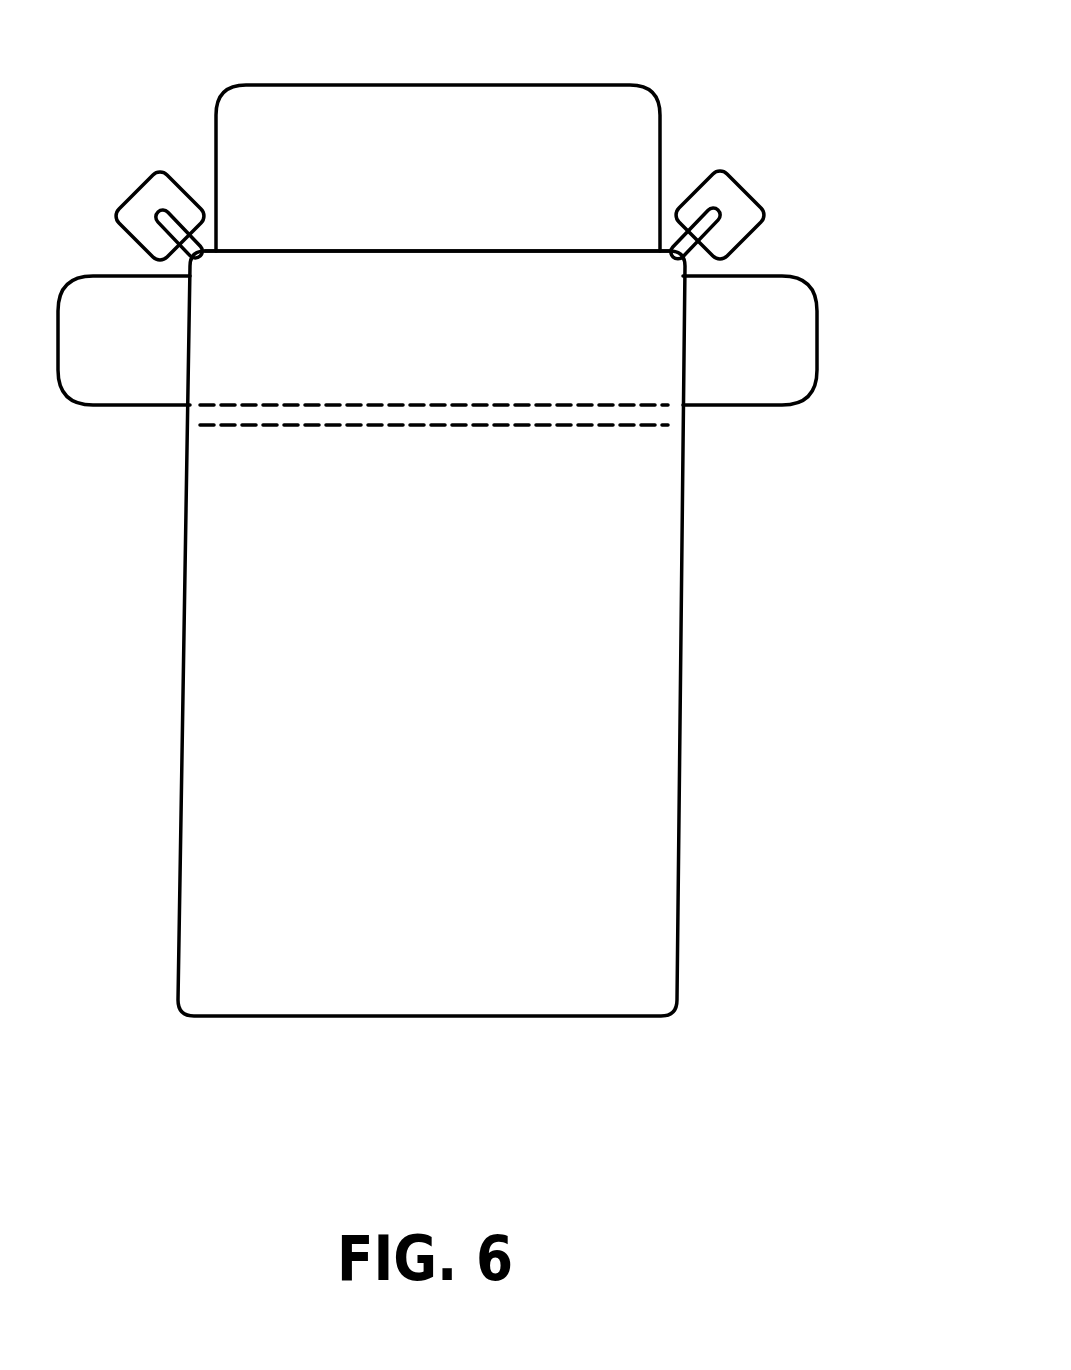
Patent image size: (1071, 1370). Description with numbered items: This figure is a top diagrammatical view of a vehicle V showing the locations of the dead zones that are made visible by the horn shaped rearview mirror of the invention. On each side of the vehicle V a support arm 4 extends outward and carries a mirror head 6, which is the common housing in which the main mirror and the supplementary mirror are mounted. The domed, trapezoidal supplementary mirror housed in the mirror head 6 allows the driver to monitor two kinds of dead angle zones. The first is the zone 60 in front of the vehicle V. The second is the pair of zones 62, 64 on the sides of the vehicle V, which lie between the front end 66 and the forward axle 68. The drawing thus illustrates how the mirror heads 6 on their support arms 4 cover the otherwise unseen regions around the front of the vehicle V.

The dead angle zone in front of the vehicle 60 is at (660, 112).
The front end 66 is at (428, 249).
The dead angle zone on the side of the vehicle 62 is at (147, 405).
The dead angle zone on the side of the vehicle 64 is at (730, 405).
The forward axle 68 is at (530, 397).
The mirror head 6 is at (125, 200).
The support arm 4 is at (158, 234).
The vehicle V is at (650, 713).